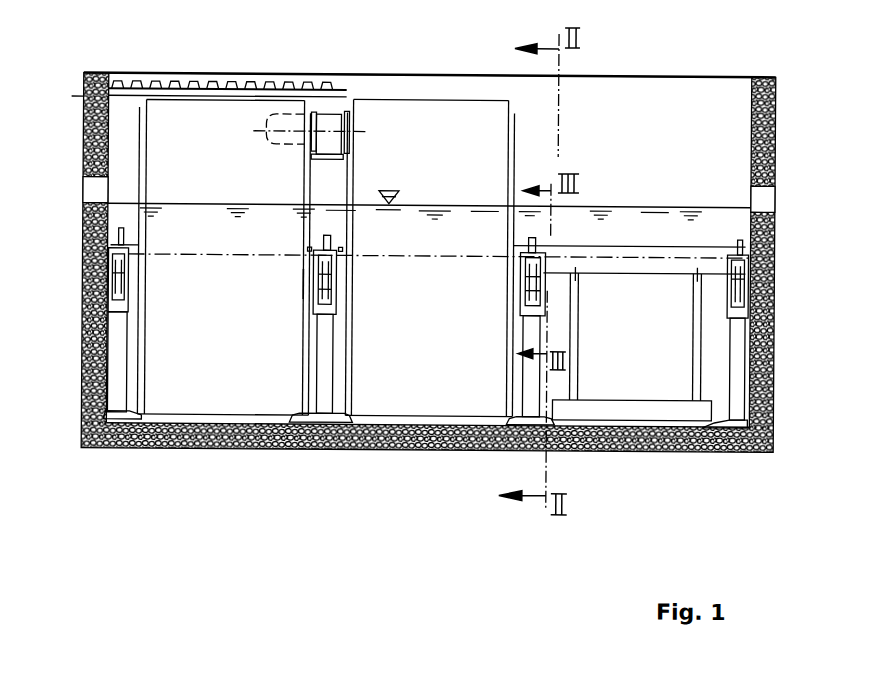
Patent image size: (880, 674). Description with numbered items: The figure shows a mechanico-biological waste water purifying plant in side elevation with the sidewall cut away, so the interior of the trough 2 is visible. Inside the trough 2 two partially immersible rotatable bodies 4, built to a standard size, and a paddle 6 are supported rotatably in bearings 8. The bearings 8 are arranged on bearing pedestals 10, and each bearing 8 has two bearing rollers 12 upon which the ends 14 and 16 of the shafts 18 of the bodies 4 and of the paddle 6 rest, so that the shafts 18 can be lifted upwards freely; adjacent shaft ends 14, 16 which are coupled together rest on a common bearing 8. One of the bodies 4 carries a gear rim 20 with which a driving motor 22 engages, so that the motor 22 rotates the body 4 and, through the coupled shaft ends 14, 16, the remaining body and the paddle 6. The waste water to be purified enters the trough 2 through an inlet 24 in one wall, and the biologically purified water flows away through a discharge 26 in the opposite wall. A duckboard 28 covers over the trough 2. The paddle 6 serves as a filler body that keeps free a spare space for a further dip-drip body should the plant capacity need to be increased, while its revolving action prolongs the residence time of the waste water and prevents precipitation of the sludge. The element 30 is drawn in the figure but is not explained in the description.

The settling basin housing 2 is at (650, 98).
The second tank 4 is at (418, 84).
The sludge collecting platform 6 is at (633, 211).
The partition wall 8 is at (288, 416).
The support column 10 is at (319, 398).
The lifting cylinder 12 is at (342, 406).
The first tank 14 is at (223, 331).
The guide bracket 16 is at (361, 405).
The carrier beam 18 is at (602, 266).
The drive plate 20 is at (362, 77).
The drive motor 22 is at (330, 123).
The inlet 24 is at (77, 367).
The outlet 26 is at (774, 378).
The rack 28 is at (191, 82).
The piston rod 30 is at (390, 399).